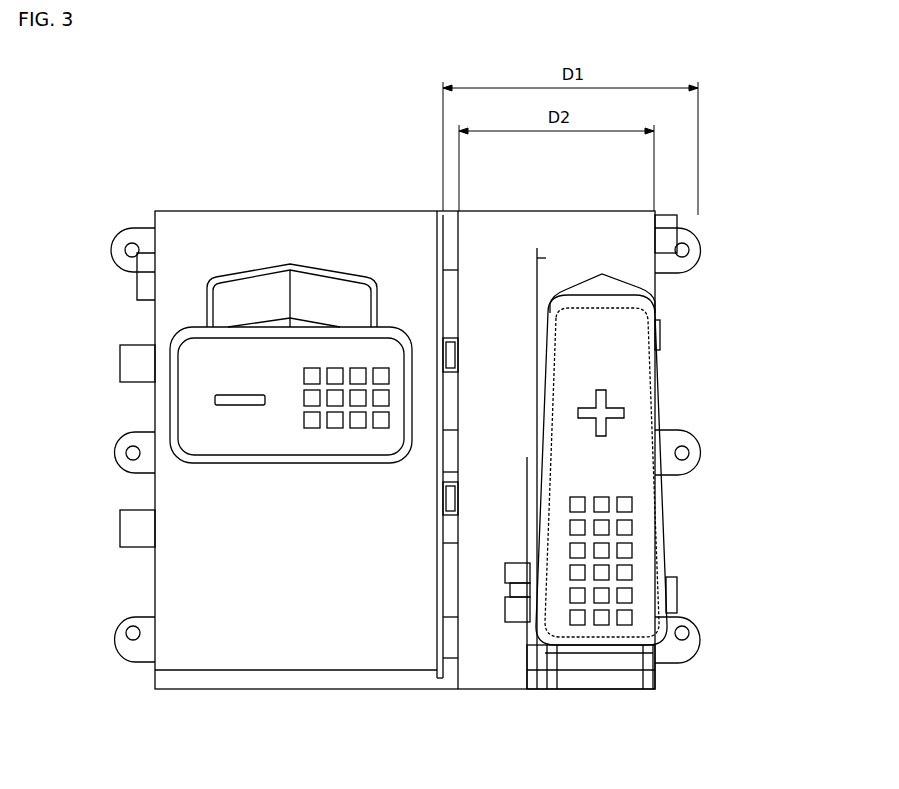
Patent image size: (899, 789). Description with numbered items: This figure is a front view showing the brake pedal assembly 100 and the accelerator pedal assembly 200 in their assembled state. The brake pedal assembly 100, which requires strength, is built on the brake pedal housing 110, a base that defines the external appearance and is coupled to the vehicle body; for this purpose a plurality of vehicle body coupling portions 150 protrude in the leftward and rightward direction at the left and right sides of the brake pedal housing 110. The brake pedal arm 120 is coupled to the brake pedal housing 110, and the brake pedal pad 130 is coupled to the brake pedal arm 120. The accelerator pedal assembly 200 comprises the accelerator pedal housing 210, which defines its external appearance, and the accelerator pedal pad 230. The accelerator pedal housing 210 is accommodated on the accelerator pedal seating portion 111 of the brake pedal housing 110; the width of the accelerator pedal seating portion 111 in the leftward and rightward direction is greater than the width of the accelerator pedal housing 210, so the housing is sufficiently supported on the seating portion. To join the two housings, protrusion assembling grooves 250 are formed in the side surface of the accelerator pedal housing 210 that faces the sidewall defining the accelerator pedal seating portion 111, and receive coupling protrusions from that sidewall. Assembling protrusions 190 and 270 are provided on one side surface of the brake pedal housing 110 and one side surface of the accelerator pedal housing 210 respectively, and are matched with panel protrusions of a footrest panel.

The brake pedal assembly 100 is at (410, 448).
The brake pedal housing 110 is at (200, 646).
The accelerator pedal seating portion 111 is at (450, 582).
The brake pedal arm 120 is at (318, 298).
The brake pedal pad 130 is at (291, 453).
The vehicle body coupling portions 150 is at (124, 252).
The assembling protrusions 190 is at (138, 364).
The accelerator pedal assembly 200 is at (649, 459).
The accelerator pedal housing 210 is at (490, 666).
The accelerator pedal pad 230 is at (648, 535).
The protrusion assembling grooves 250 is at (440, 355).
The assembling protrusions 270 is at (668, 226).